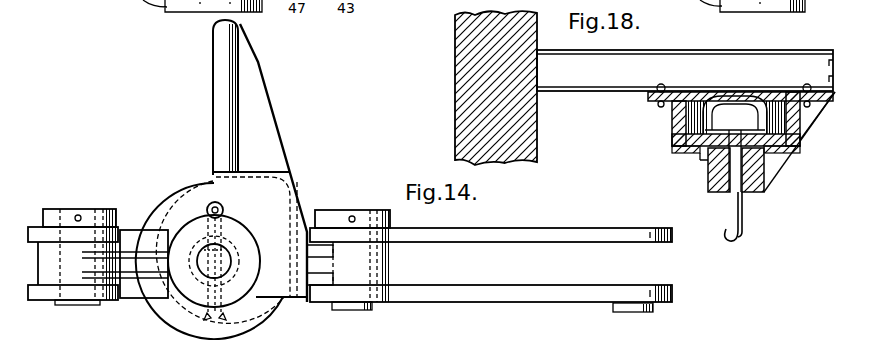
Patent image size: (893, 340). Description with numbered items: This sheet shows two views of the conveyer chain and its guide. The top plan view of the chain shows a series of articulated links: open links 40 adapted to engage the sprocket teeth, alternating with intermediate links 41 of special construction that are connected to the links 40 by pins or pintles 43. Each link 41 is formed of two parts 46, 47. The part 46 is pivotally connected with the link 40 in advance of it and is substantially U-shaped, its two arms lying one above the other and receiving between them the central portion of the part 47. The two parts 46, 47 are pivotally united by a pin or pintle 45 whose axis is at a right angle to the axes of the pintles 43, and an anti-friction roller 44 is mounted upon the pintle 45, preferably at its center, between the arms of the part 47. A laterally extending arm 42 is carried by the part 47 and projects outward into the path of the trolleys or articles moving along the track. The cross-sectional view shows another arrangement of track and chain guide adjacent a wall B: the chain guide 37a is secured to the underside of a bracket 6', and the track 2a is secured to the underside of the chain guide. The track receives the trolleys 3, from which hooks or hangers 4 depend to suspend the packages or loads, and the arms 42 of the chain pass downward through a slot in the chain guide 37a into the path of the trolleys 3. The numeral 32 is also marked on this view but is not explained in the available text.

In FIG. 14, the laterally extending arm 42 is at (218, 88).
In FIG. 18, the laterally extending arm 42 is at (706, 166).
In FIG. 14, the link part 47 is at (301, 222).
In FIG. 14, the anti-friction roller 44 is at (210, 260).
In FIG. 14, the pin or pintle 45 is at (204, 252).
In FIG. 14, the link part 46 is at (134, 230).
In FIG. 14, the link 41 is at (98, 271).
In FIG. 18, the link 41 is at (801, 8).
In FIG. 14, the link 40 is at (491, 256).
In FIG. 14, the pin or pintle 43 is at (350, 310).
In FIG. 18, the wall B is at (530, 129).
In FIG. 18, the rail flange 32 is at (745, 91).
In FIG. 18, the bracket 6' is at (685, 58).
In FIG. 18, the chain guide 37a is at (729, 115).
In FIG. 18, the trolley 3 is at (762, 170).
In FIG. 18, the track 2a is at (706, 195).
In FIG. 18, the hook or hanger 4 is at (746, 212).